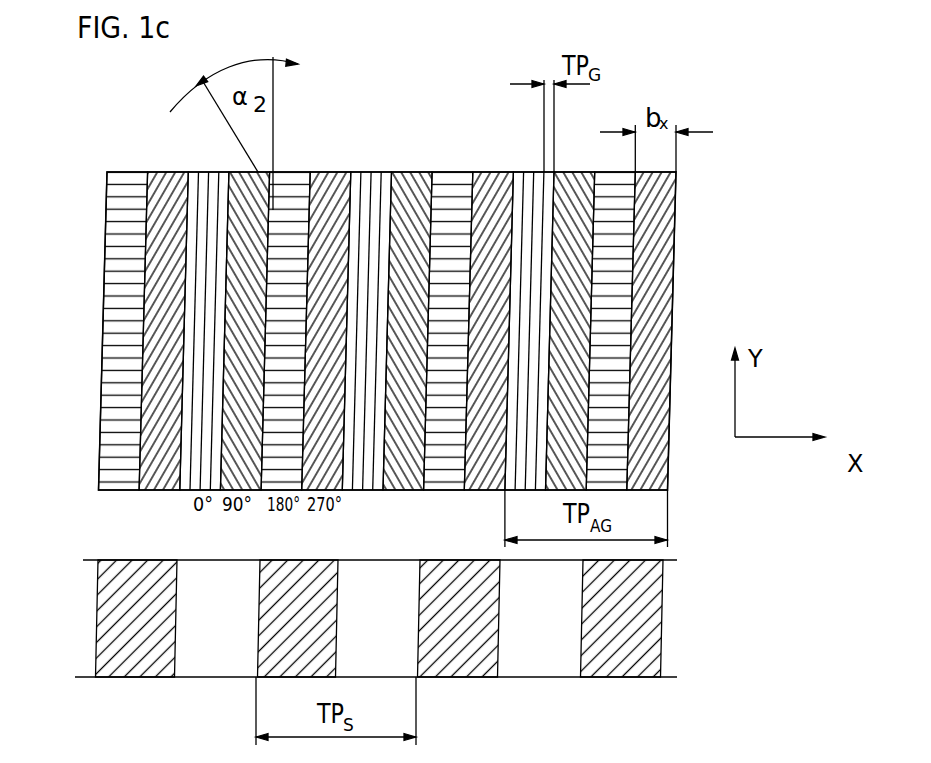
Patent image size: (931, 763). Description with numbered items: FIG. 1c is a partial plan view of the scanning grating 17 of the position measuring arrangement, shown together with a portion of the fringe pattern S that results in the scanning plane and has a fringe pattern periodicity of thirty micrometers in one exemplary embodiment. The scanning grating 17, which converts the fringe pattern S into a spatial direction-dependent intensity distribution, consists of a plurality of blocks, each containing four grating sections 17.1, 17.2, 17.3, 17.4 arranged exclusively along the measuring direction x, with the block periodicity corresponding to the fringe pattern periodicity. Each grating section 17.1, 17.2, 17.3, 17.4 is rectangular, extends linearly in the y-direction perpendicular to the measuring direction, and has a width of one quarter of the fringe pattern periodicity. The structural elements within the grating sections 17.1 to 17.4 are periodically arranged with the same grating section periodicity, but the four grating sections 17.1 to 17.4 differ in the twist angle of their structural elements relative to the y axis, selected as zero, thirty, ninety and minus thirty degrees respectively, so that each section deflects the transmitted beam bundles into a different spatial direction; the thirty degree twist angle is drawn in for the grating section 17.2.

The scanning grating 17 is at (690, 258).
The grating section 17.1 is at (213, 202).
The grating section 17.2 is at (247, 203).
The grating section 17.3 is at (293, 192).
The grating section 17.4 is at (340, 185).
The fringe pattern S is at (682, 618).